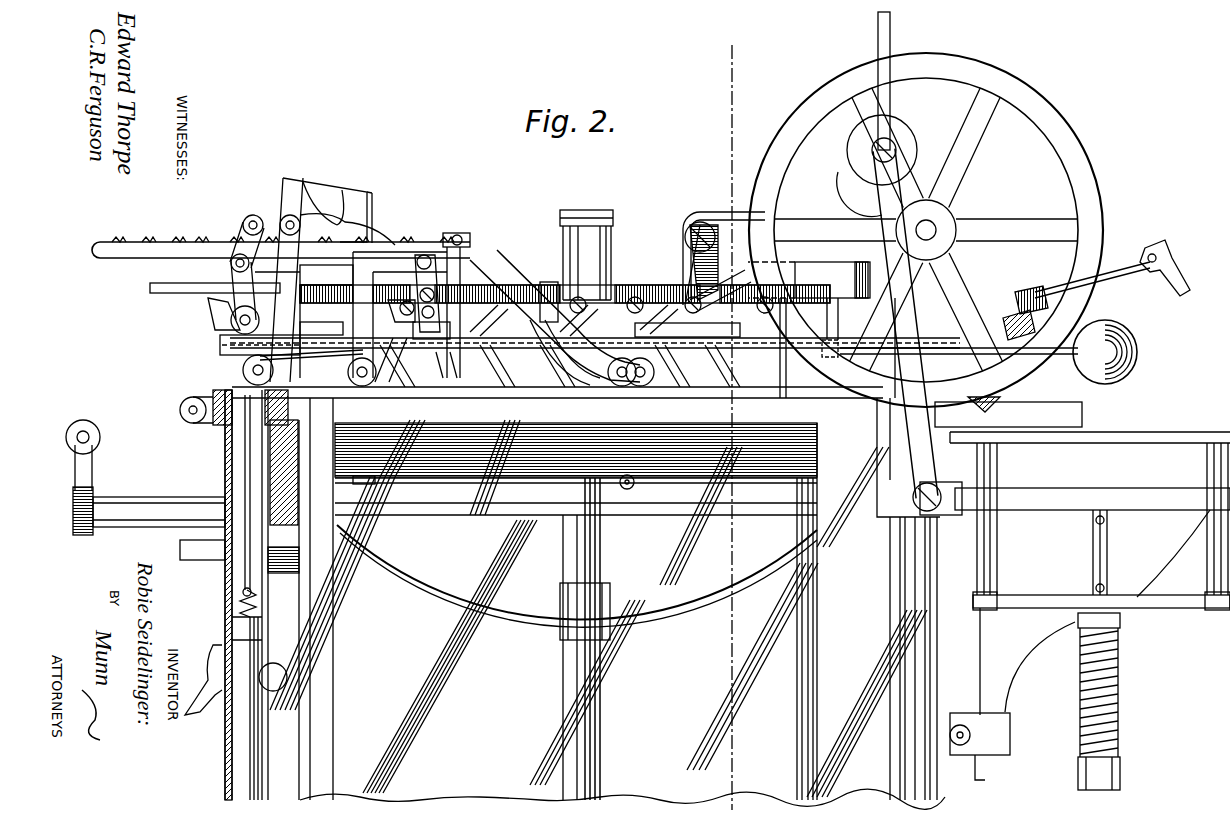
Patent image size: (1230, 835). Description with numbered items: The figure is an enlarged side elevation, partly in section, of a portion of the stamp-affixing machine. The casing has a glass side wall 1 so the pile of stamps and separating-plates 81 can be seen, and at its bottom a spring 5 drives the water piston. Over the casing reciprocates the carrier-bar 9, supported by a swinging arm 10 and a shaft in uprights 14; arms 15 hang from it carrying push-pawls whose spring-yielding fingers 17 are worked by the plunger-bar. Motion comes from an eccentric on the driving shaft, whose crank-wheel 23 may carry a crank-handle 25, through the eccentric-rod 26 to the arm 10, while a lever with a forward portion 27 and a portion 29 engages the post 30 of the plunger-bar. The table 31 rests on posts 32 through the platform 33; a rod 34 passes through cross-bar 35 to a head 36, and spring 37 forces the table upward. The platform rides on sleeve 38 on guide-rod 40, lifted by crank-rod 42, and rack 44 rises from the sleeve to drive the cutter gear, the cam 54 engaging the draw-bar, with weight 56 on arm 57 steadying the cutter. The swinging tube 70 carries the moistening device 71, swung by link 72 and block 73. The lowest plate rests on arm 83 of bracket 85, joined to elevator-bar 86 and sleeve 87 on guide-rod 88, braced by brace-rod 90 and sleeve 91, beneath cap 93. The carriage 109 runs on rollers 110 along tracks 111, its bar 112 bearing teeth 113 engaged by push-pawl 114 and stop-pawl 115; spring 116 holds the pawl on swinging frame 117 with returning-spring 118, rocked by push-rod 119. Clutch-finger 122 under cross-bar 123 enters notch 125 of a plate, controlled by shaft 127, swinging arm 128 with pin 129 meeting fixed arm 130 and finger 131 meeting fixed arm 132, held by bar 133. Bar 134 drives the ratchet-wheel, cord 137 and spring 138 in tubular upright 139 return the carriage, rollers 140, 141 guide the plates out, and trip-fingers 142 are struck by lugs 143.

The side wall 1 is at (334, 683).
The spring 5 is at (737, 425).
The carrier-bar 9 is at (222, 349).
The swinging arm 10 is at (676, 268).
The uprights 14 is at (253, 272).
The arms 15 is at (680, 386).
The spring-yielding finger 17 is at (632, 385).
The crank-wheel 23 is at (1020, 104).
The crank-handle 25 is at (908, 150).
The eccentric-rod 26 is at (722, 276).
The forwardly-extended lever portion 27 is at (723, 222).
The lever portion 29 is at (652, 292).
The post 30 is at (551, 280).
The table 31 is at (1124, 443).
The posts 32 is at (997, 570).
The platform 33 is at (1124, 488).
The rod 34 is at (1093, 554).
The cross-bar 35 is at (1170, 602).
The head 36 is at (1120, 772).
The spring 37 is at (1120, 680).
The sleeve 38 is at (950, 516).
The vertical guide-rod 40 is at (941, 686).
The crank-rod 42 is at (880, 500).
The rack 44 is at (891, 52).
The cam 54 is at (863, 262).
The weight 56 is at (1138, 352).
The arm 57 is at (1062, 356).
The tube 70 is at (1112, 265).
The moistening device 71 is at (1181, 288).
The link 72 is at (1000, 400).
The block 73 is at (1030, 292).
The separating-plates 81 is at (490, 482).
The arm 83 is at (376, 481).
The bracket 85 is at (370, 516).
The elevator-bar 86 is at (647, 517).
The sleeve 87 is at (563, 522).
The guide-rod 88 is at (600, 710).
The brace-rod 90 is at (530, 620).
The sleeve 91 is at (560, 593).
The cap 93 is at (612, 256).
The carriage 109 is at (480, 250).
The rollers 110 is at (372, 380).
The tracks 111 is at (445, 385).
The bar 112 is at (197, 243).
The teeth 113 is at (148, 243).
The push-pawl 114 is at (398, 236).
The stop-pawl 115 is at (375, 200).
The spring 116 is at (326, 193).
The swinging frame 117 is at (244, 222).
The returning-spring 118 is at (222, 322).
The push-rod 119 is at (192, 294).
The clutch-finger 122 is at (458, 377).
The cross-bar 123 is at (475, 236).
The notch 125 is at (636, 485).
The shaft 127 is at (427, 256).
The swinging arm 128 is at (415, 256).
The pin 129 is at (470, 338).
The fixed arm 130 is at (687, 329).
The finger 131 is at (440, 348).
The fixed arm 132 is at (321, 328).
The bar 133 is at (431, 331).
The bar 134 is at (546, 283).
The cord 137 is at (245, 454).
The spring 138 is at (240, 606).
The tubular upright 139 is at (225, 576).
The roller 140 is at (196, 397).
The roller 141 is at (95, 425).
The trip-fingers 142 is at (565, 321).
The lugs 143 is at (395, 318).